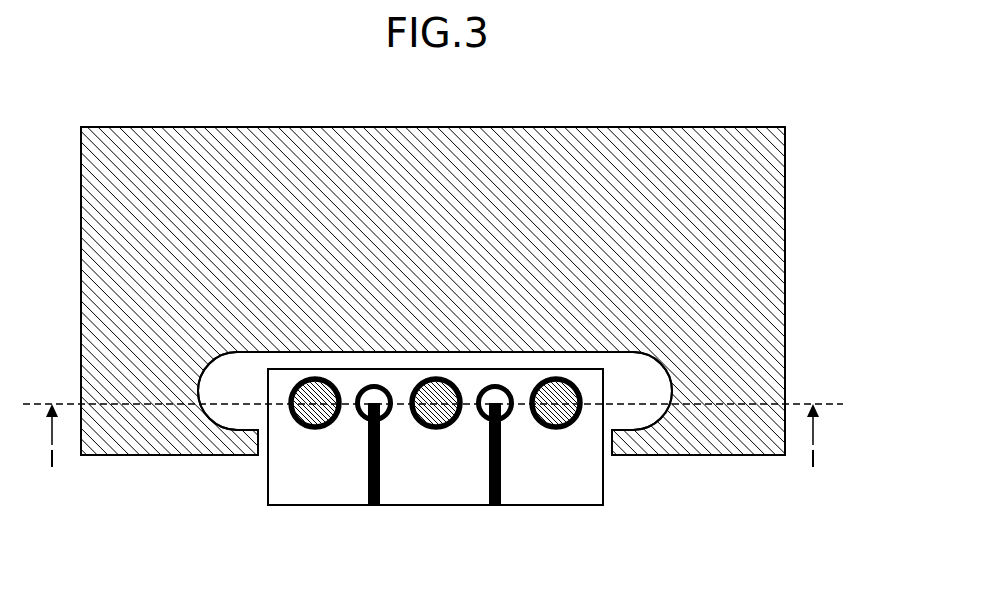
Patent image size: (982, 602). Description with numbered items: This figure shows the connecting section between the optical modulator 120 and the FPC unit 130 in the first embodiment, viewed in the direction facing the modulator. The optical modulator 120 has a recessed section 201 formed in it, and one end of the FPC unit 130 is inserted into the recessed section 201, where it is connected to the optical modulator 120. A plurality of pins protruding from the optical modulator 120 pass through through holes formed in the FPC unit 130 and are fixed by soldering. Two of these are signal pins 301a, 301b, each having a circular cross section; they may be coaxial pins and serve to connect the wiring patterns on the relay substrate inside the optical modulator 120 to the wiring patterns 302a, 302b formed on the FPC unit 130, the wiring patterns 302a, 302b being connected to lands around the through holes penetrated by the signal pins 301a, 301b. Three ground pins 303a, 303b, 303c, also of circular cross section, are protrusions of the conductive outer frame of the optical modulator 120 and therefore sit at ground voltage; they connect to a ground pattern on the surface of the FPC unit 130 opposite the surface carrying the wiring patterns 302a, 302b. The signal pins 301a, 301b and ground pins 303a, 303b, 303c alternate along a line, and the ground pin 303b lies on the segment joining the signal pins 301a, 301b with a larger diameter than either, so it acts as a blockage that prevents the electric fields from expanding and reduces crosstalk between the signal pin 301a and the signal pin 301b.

The optical modulator 120 is at (720, 127).
The recessed section 201 is at (660, 377).
The FPC unit 130 is at (603, 478).
The ground pin 303a is at (313, 428).
The ground pin 303b is at (434, 430).
The ground pin 303c is at (573, 431).
The signal pin 301a is at (368, 418).
The signal pin 301b is at (503, 416).
The wiring pattern 302a is at (374, 506).
The wiring pattern 302b is at (495, 506).